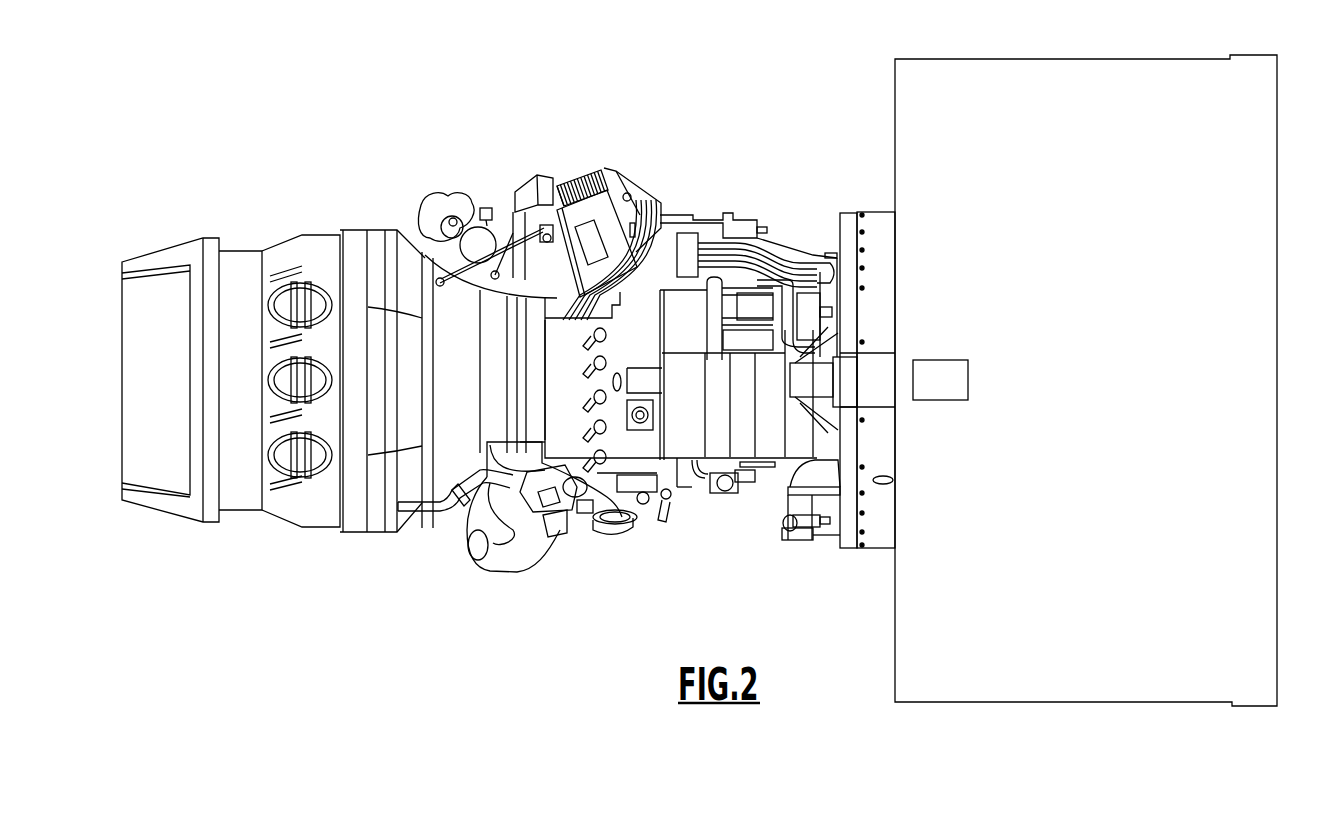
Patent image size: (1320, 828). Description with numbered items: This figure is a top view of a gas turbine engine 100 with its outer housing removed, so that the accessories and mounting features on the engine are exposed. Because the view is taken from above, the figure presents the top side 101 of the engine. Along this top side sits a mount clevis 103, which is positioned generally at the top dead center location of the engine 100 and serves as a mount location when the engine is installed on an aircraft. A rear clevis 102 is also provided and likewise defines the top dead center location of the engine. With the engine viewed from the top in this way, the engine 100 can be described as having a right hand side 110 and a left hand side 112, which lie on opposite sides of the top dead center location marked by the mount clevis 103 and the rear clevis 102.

The gas turbine engine 100 is at (722, 118).
The top side 101 is at (290, 595).
The rear clevis 102 is at (290, 383).
The mount clevis 103 is at (943, 378).
The right hand side 110 is at (585, 545).
The left hand side 112 is at (515, 168).